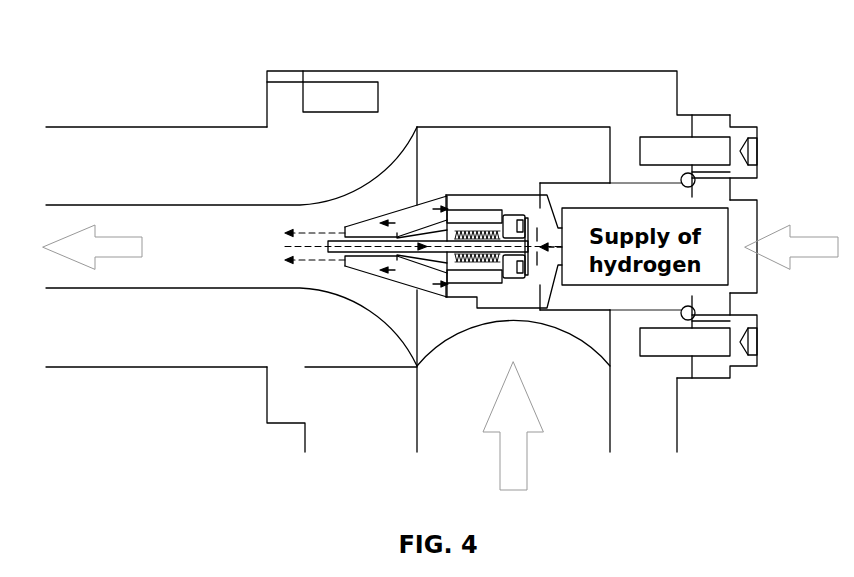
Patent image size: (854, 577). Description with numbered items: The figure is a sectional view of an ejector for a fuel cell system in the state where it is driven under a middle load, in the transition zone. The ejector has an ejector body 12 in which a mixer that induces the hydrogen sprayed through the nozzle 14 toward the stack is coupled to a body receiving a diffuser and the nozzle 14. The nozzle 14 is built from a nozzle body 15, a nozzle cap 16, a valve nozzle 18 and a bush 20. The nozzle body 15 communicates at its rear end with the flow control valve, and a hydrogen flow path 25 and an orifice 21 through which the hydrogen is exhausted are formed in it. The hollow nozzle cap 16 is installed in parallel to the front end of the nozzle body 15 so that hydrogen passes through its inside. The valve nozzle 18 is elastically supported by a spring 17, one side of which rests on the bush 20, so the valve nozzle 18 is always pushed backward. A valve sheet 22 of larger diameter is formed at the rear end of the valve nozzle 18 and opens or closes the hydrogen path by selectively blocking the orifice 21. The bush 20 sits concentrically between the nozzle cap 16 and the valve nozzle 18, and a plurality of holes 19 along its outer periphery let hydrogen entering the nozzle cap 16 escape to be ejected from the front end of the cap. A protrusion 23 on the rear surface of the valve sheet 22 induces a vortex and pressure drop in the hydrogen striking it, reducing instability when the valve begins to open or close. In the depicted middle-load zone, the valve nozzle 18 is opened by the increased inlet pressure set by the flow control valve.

The ejector body 12 is at (147, 137).
The nozzle 14 is at (532, 207).
The nozzle body 15 is at (662, 185).
The nozzle cap 16 is at (373, 230).
The spring 17 is at (483, 232).
The valve nozzle 18 is at (398, 236).
The holes 19 is at (465, 218).
The bush 20 is at (460, 205).
The orifice 21 is at (543, 308).
The valve sheet 22 is at (512, 218).
The protrusion 23 is at (553, 186).
The hydrogen flow path 25 is at (743, 227).